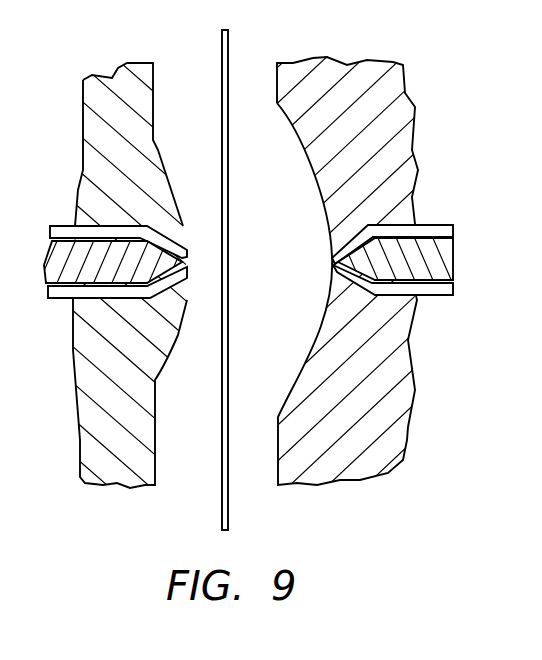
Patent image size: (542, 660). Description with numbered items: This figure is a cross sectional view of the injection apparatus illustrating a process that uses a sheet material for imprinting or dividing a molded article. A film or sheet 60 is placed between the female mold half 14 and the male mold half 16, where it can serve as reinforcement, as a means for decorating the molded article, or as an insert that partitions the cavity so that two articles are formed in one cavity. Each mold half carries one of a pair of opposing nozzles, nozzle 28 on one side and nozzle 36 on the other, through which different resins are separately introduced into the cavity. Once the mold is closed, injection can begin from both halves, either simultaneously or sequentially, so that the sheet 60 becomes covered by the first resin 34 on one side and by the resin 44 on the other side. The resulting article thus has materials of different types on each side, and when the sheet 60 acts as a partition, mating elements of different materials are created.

The female mold half 14 is at (403, 428).
The male mold half 16 is at (107, 467).
The nozzle 28 is at (455, 282).
The first resin 34 is at (440, 230).
The nozzle 36 is at (47, 285).
The resin 44 is at (64, 227).
The film or sheet 60 is at (229, 42).